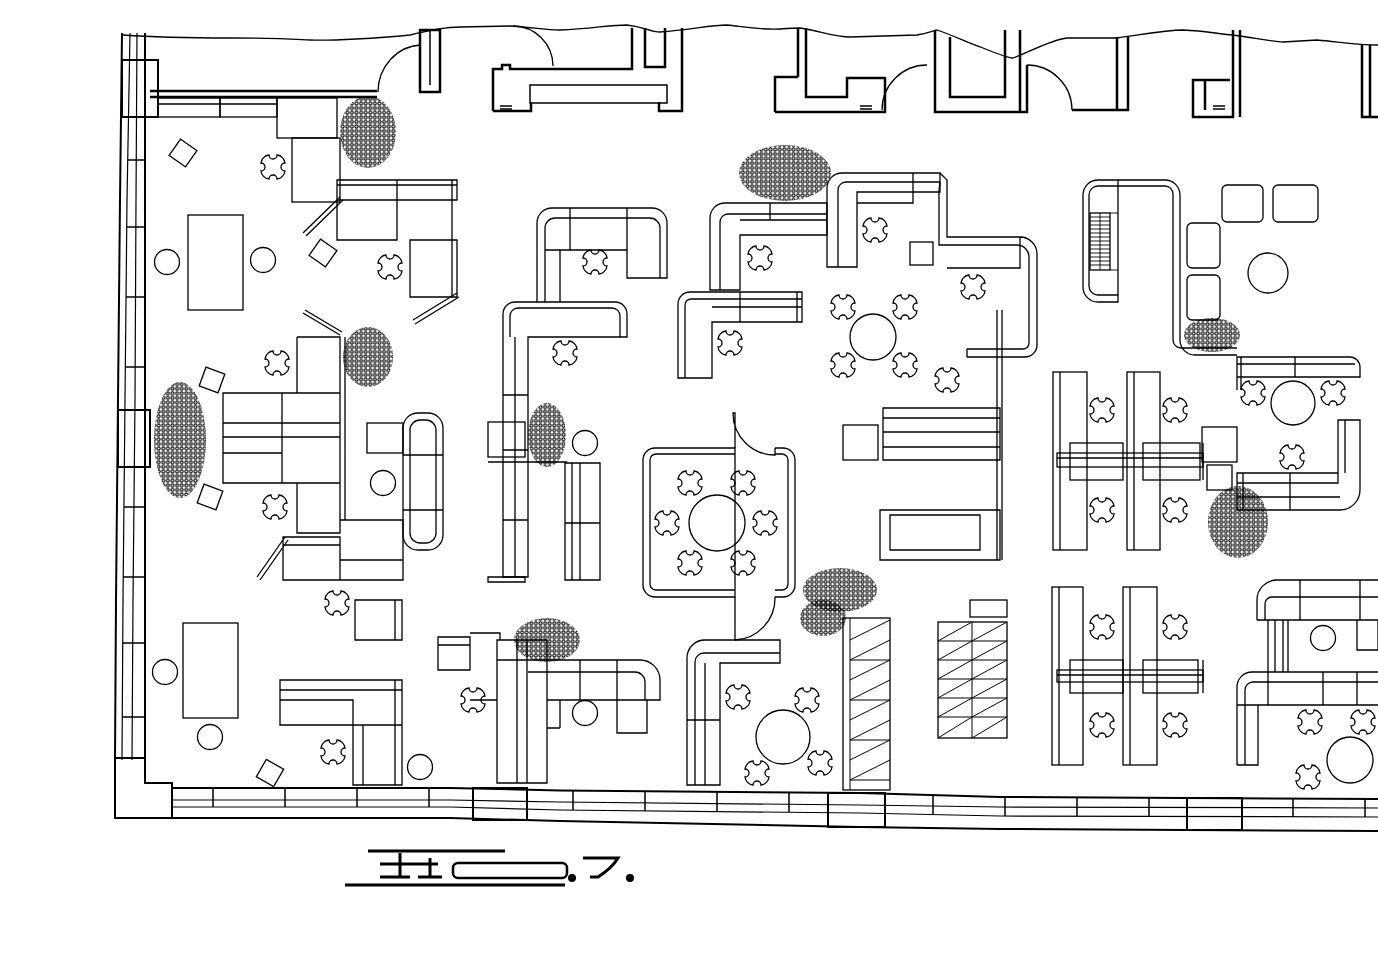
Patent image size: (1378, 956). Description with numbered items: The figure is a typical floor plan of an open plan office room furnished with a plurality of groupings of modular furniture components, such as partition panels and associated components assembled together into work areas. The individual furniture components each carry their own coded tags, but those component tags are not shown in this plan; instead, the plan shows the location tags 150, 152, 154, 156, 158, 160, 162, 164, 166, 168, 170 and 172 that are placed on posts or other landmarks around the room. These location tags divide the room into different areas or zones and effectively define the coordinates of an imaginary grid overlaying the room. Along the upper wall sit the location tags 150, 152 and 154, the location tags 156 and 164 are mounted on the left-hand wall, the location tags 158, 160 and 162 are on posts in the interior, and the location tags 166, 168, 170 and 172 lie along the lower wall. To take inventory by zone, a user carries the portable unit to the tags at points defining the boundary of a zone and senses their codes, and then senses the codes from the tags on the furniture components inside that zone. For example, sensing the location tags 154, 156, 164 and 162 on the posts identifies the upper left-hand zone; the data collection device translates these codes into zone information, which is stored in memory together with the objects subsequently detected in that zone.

The location tag 150 is at (1217, 112).
The location tag 152 is at (868, 112).
The location tag 154 is at (505, 112).
The location tag 156 is at (145, 110).
The location tag 158 is at (1214, 432).
The location tag 160 is at (858, 430).
The location tag 162 is at (492, 440).
The location tag 164 is at (150, 420).
The location tag 166 is at (1214, 806).
The location tag 168 is at (838, 803).
The location tag 170 is at (482, 788).
The location tag 172 is at (158, 788).